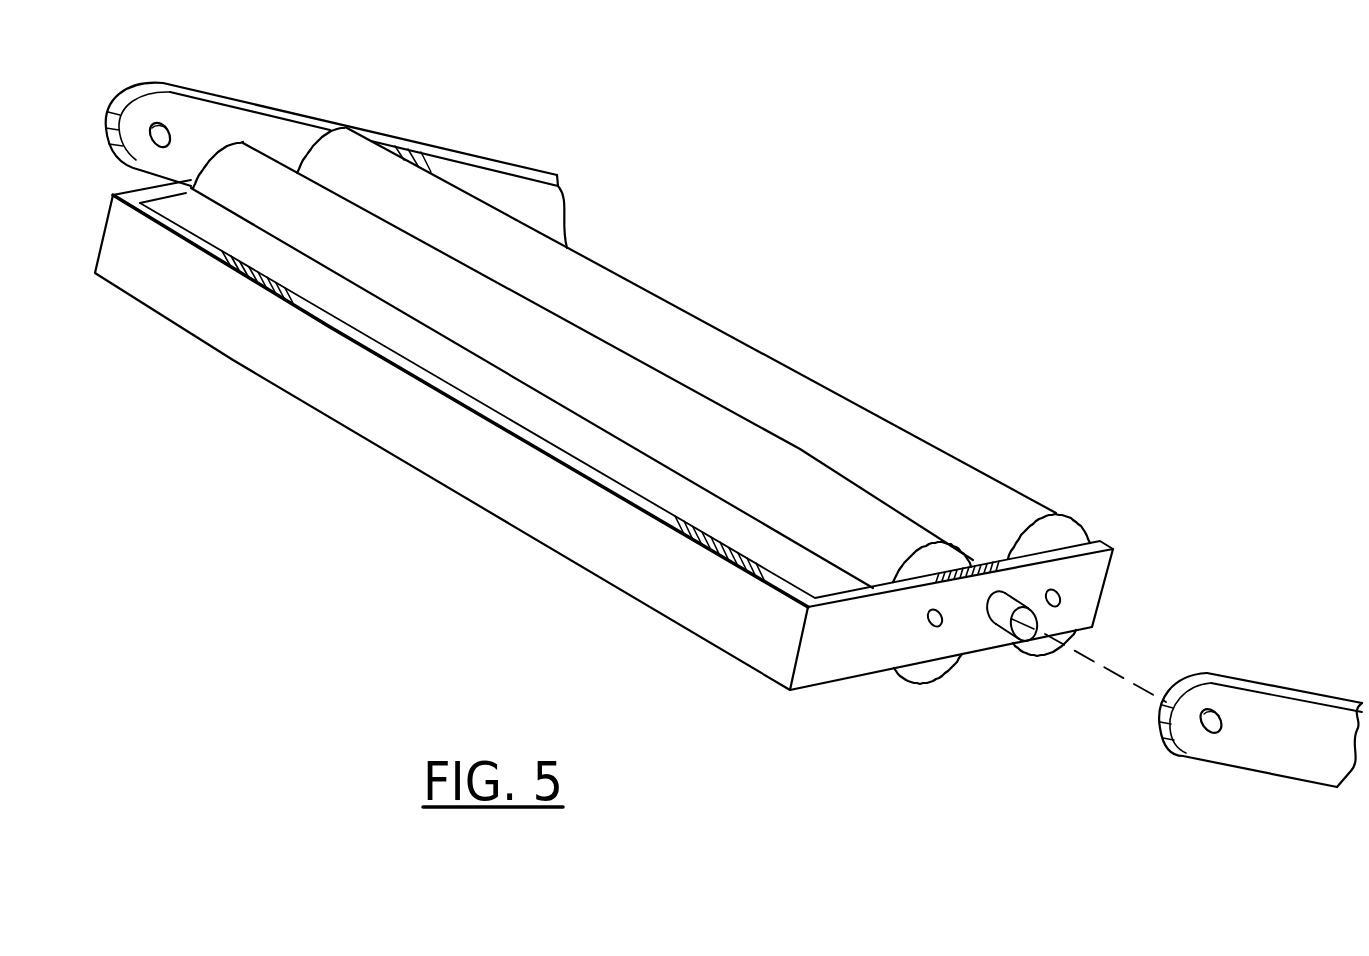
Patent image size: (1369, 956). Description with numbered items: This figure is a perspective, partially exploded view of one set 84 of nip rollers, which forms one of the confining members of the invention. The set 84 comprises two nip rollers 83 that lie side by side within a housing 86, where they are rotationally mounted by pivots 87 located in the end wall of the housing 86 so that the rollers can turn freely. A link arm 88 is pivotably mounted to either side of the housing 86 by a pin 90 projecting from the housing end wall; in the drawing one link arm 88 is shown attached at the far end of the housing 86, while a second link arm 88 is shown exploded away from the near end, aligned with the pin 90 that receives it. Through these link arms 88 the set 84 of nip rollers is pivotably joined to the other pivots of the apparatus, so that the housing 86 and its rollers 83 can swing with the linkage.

The nip roller 83 is at (918, 450).
The set of nip rollers 84 is at (640, 405).
The housing 86 is at (358, 408).
The pivot 87 is at (1060, 598).
The link arm 88 is at (292, 113).
The pin 90 is at (999, 632).